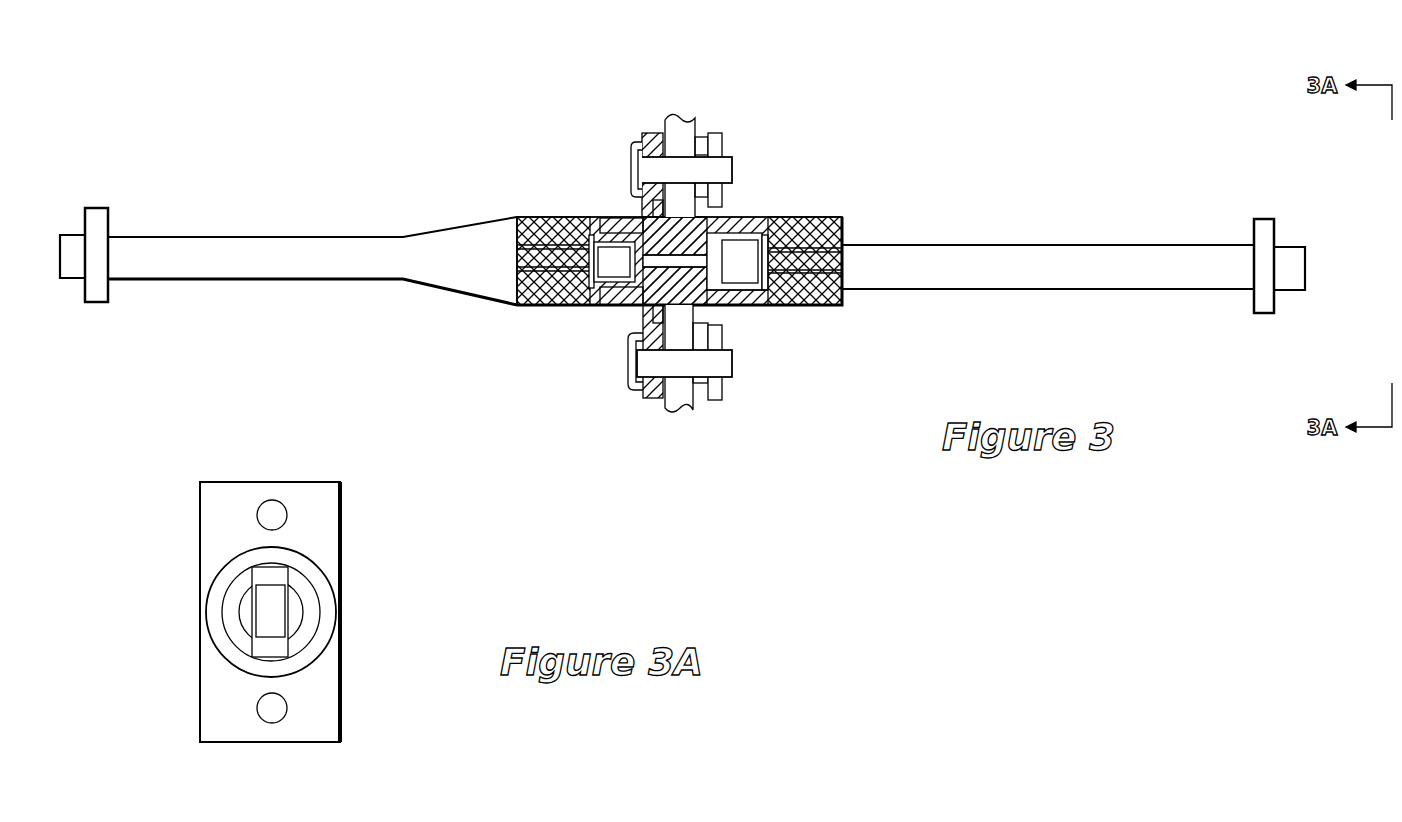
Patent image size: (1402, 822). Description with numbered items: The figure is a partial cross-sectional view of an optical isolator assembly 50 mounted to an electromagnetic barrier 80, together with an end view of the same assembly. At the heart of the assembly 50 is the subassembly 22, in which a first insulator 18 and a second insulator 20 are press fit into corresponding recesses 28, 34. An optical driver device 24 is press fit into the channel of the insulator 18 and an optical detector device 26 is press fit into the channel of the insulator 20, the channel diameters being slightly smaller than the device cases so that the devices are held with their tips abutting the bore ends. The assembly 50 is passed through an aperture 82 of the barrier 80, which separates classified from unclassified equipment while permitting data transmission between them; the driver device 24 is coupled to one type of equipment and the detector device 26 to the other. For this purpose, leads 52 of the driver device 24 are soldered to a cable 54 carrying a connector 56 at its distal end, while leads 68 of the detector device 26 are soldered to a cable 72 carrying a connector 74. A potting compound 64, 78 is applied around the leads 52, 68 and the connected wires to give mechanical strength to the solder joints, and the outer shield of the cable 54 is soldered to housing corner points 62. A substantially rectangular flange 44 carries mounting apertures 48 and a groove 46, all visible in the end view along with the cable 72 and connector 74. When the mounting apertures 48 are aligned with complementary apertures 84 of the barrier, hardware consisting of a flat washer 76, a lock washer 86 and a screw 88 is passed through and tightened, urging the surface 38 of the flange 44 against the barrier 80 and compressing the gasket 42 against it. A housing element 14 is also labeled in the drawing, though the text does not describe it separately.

In FIG. 3, the housing 14 is at (556, 210).
In FIG. 3, the insulator 18 is at (617, 230).
In FIG. 3, the insulator 20 is at (733, 216).
In FIG. 3, the subassembly 22 is at (622, 122).
In FIG. 3, the optical driver device 24 is at (585, 308).
In FIG. 3, the optical detector device 26 is at (752, 238).
In FIG. 3, the recess 28 is at (620, 303).
In FIG. 3, the recess 34 is at (740, 307).
In FIG. 3, the surface 38 is at (670, 333).
In FIG. 3, the gasket 42 is at (697, 340).
In FIG. 3, the flange 44 is at (655, 132).
In FIG. 3A, the flange 44 is at (342, 507).
In FIG. 3A, the groove 46 is at (302, 583).
In FIG. 3, the mounting apertures 48 is at (660, 397).
In FIG. 3A, the mounting apertures 48 is at (272, 512).
In FIG. 3, the optical isolator assembly 50 is at (305, 148).
In FIG. 3, the leads 52 is at (532, 307).
In FIG. 3, the cable 54 is at (447, 226).
In FIG. 3, the connector 56 is at (98, 207).
In FIG. 3, the housing corner points 62 is at (640, 215).
In FIG. 3, the potting compound 64 is at (535, 240).
In FIG. 3, the leads 68 is at (830, 232).
In FIG. 3, the cable 72 is at (1000, 243).
In FIG. 3A, the cable 72 is at (292, 617).
In FIG. 3, the connector 74 is at (1265, 216).
In FIG. 3A, the connector 74 is at (270, 627).
In FIG. 3, the flat washer 76 is at (722, 141).
In FIG. 3, the potting compound 78 is at (848, 294).
In FIG. 3, the barrier 80 is at (682, 118).
In FIG. 3, the aperture 82 is at (697, 308).
In FIG. 3, the apertures 84 is at (677, 153).
In FIG. 3, the lock washer 86 is at (700, 140).
In FIG. 3, the screw 88 is at (722, 172).